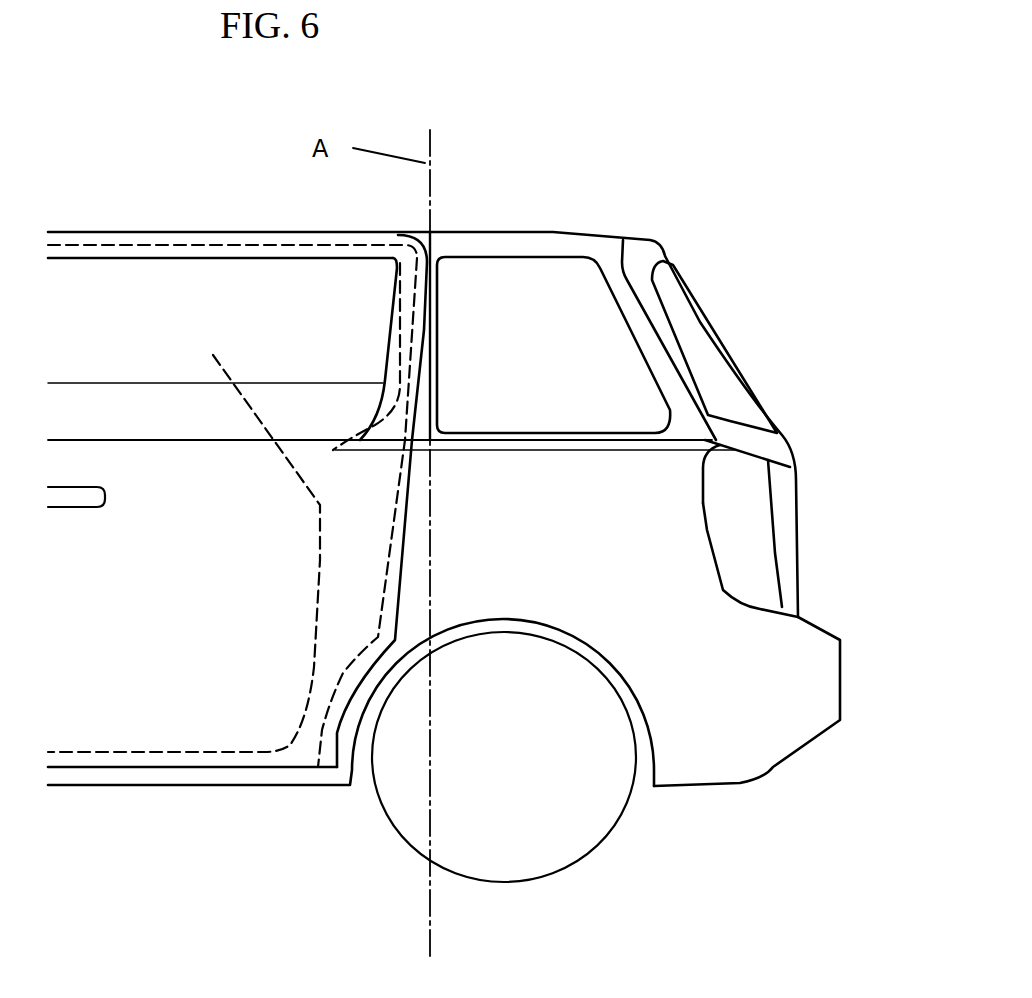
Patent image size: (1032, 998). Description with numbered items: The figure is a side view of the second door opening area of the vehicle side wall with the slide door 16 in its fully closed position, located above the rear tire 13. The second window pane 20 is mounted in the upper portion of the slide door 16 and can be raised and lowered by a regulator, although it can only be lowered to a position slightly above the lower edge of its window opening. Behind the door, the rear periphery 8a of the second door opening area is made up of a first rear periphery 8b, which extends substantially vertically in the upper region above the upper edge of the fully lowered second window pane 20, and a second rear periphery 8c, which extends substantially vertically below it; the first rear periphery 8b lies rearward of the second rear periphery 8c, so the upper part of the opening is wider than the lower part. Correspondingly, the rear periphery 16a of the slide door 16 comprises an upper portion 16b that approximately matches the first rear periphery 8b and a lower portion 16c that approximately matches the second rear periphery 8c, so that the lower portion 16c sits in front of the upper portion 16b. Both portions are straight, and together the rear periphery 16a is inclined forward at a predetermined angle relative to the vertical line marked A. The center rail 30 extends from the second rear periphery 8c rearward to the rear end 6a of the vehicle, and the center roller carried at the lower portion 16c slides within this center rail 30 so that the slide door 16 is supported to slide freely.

The rear end of vehicle 6a is at (715, 406).
The rear periphery of the second door opening area 8a is at (143, 275).
The first rear periphery 8b is at (395, 313).
The second rear periphery 8c is at (184, 547).
The tire 13 is at (517, 792).
The slide door 16 is at (275, 603).
The rear periphery of the slide door 16a is at (592, 488).
The upper portion of the rear periphery 16b is at (428, 333).
The lower portion of the rear periphery 16c is at (410, 527).
The second window pane 20 is at (310, 403).
The center rail 30 is at (710, 446).